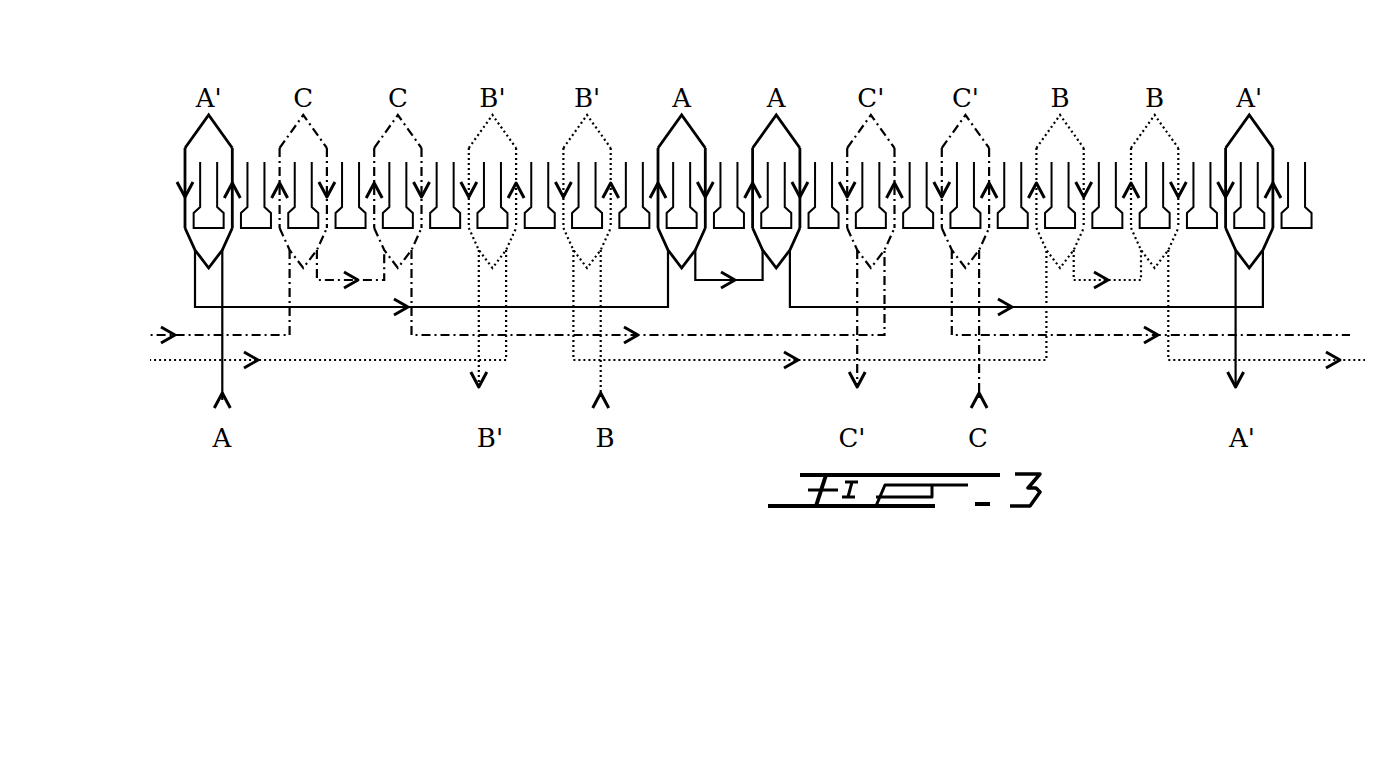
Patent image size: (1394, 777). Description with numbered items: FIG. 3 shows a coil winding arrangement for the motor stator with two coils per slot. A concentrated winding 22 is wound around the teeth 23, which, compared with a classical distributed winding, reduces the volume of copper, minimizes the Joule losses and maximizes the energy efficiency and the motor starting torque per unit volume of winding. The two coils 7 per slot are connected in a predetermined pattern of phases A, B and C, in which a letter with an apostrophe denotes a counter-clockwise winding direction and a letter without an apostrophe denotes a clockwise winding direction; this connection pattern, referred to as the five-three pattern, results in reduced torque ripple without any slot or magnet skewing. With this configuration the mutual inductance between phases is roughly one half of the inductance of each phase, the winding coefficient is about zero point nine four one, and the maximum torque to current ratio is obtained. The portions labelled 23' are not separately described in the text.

The coil 7 is at (198, 132).
The concentrated winding 22 is at (220, 134).
The teeth 23 is at (690, 246).
The stator teeth 23' is at (753, 220).